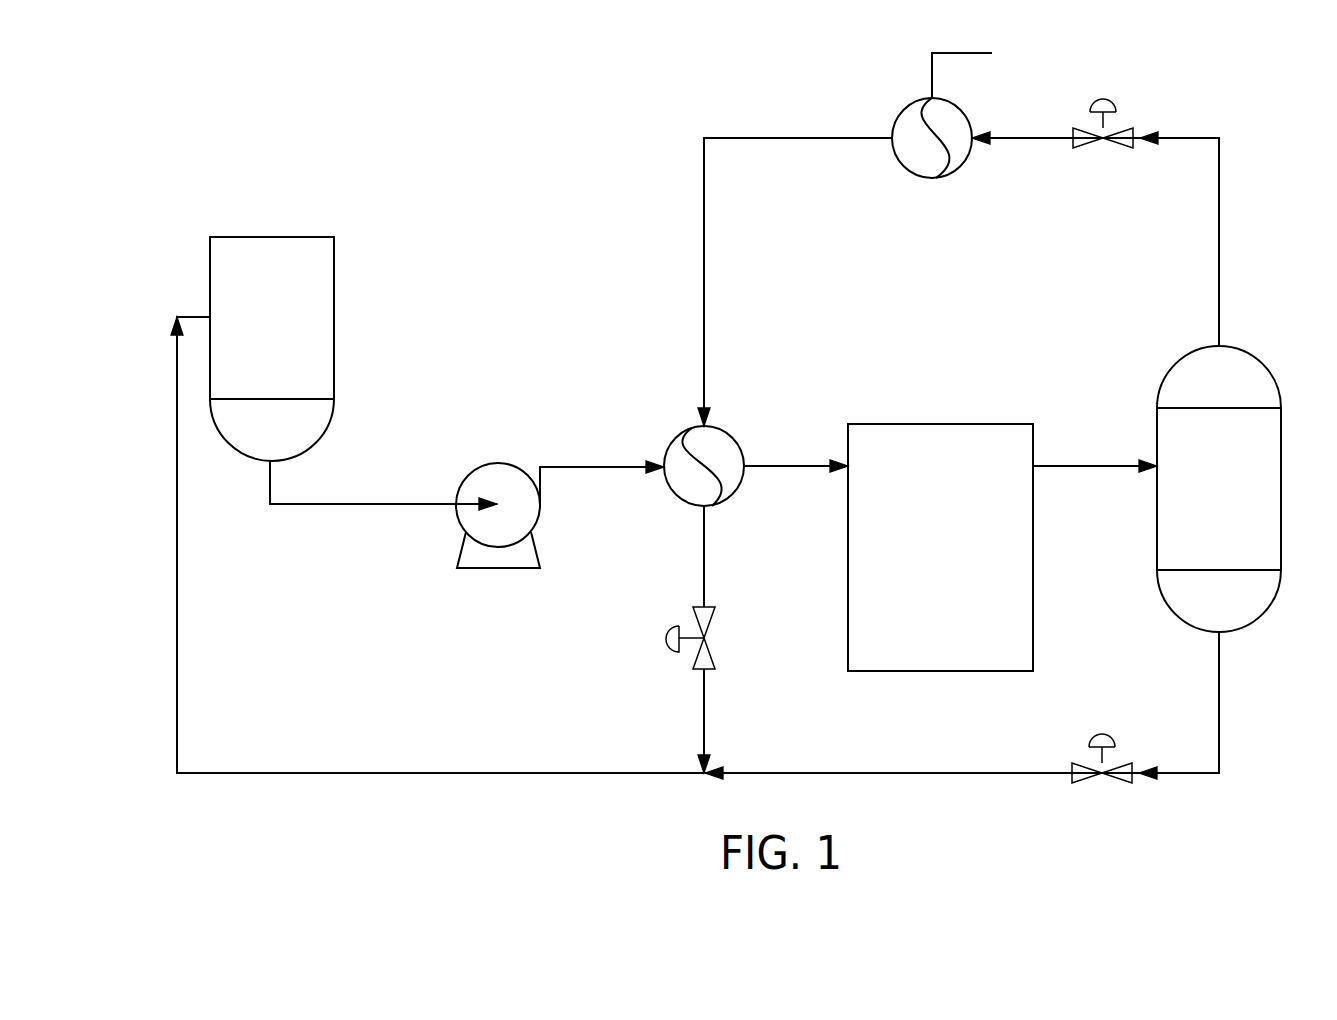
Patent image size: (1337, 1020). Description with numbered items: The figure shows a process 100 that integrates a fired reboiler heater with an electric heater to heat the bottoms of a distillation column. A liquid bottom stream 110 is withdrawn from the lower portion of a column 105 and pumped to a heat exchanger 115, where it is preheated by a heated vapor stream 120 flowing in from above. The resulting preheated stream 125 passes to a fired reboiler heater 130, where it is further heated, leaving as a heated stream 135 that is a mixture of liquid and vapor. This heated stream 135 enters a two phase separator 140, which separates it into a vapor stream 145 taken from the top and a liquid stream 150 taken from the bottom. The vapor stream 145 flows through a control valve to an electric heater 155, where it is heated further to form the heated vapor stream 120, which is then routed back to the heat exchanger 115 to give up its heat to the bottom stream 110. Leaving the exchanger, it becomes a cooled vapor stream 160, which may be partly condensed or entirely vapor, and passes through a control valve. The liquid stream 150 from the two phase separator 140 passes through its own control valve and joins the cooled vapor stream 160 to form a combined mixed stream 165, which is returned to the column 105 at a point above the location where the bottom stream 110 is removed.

The process 100 is at (534, 110).
The column 105 is at (313, 237).
The bottom stream 110 is at (271, 483).
The heat exchanger 115 is at (688, 430).
The heated vapor stream 120 is at (706, 321).
The preheated stream 125 is at (797, 462).
The fired reboiler heater 130 is at (943, 423).
The heated stream 135 is at (1096, 463).
The two phase separator 140 is at (1262, 357).
The vapor stream 145 is at (1220, 240).
The liquid stream 150 is at (1222, 703).
The electric heater 155 is at (913, 108).
The cooled vapor stream 160 is at (707, 556).
The combined mixed stream 165 is at (566, 770).